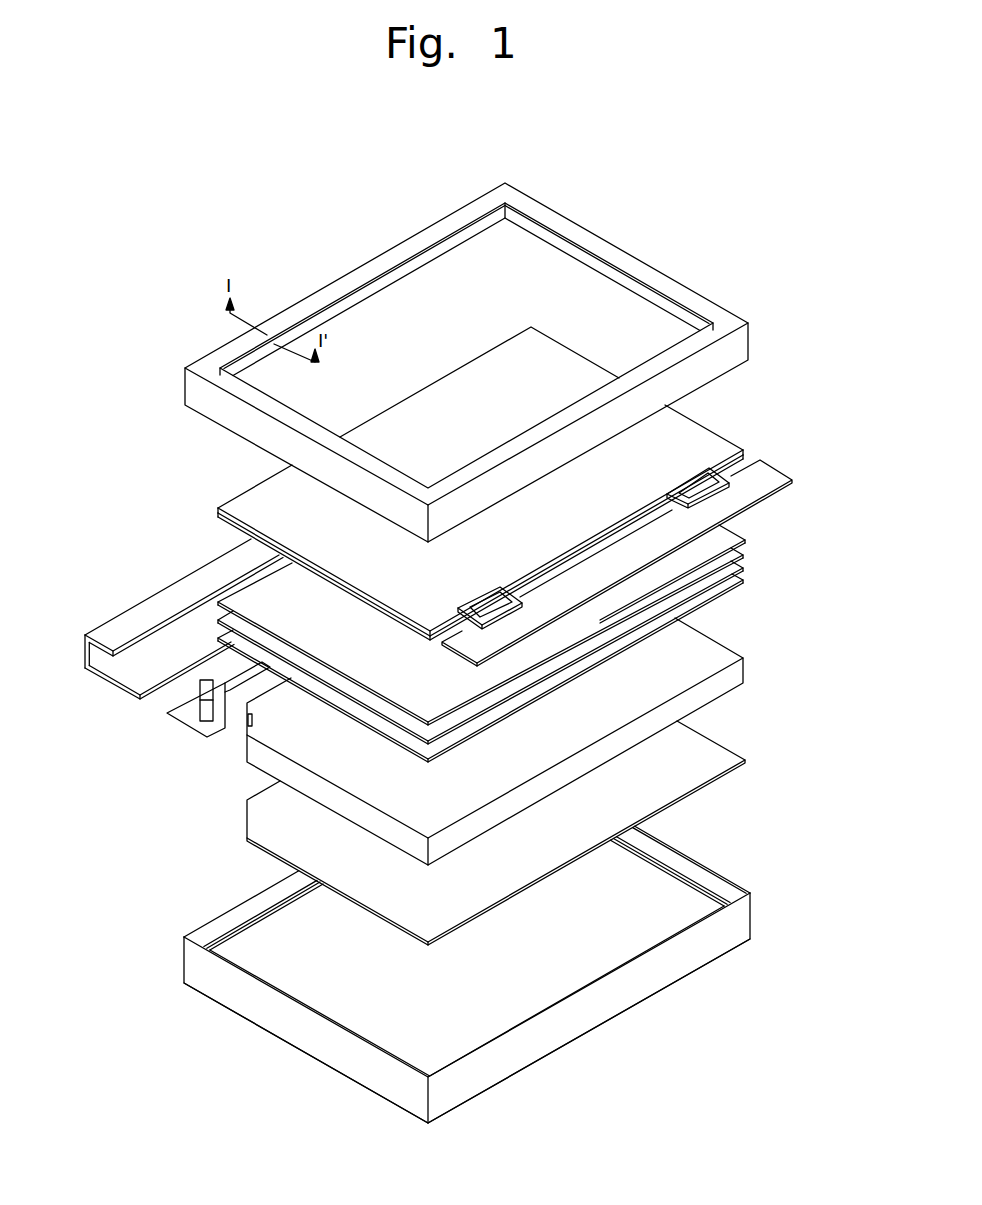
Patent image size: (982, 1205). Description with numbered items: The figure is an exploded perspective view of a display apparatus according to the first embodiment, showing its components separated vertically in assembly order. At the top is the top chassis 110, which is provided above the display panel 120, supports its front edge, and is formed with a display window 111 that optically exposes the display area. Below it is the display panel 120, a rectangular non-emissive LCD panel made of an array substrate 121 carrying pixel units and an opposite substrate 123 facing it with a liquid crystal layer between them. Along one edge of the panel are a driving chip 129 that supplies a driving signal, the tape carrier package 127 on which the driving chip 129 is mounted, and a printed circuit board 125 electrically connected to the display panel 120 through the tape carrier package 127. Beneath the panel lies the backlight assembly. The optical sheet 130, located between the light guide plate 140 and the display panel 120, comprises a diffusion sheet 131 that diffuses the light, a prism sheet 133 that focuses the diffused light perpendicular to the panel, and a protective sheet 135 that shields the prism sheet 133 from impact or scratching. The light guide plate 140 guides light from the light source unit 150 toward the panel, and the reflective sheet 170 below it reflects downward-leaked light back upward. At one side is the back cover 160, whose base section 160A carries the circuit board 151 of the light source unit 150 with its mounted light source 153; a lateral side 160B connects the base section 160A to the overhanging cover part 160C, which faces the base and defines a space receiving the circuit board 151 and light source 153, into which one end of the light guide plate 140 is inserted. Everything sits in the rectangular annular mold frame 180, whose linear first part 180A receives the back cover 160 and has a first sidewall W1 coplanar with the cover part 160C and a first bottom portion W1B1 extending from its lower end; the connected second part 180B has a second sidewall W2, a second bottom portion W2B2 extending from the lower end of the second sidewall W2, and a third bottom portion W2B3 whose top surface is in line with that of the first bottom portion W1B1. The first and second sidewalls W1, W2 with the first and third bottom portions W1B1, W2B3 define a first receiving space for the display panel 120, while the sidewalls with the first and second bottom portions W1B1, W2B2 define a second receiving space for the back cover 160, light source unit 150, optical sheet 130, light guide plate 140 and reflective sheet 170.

The top chassis 110 is at (350, 271).
The display window 111 is at (557, 268).
The display panel 120 is at (510, 483).
The array substrate 121 is at (732, 453).
The opposite substrate 123 is at (710, 440).
The printed circuit board 125 is at (705, 555).
The tape carrier package 127 is at (687, 528).
The driving chip 129 is at (700, 493).
The optical sheet 130 is at (533, 655).
The diffusion sheet 131 is at (702, 600).
The prism sheet 133 is at (702, 590).
The protective sheet 135 is at (707, 563).
The light guide plate 140 is at (733, 675).
The light source unit 150 is at (157, 724).
The circuit board 151 is at (199, 712).
The light source 153 is at (170, 720).
The back cover 160 is at (162, 624).
The base section 160A is at (102, 683).
The lateral side 160B is at (85, 652).
The cover part 160C is at (190, 587).
The reflective sheet 170 is at (693, 742).
The mold frame 180 is at (487, 974).
The first part 180A is at (270, 893).
The second part 180B is at (315, 1040).
The first sidewall W1 is at (203, 937).
The first bottom portion W1B1 is at (253, 930).
The second sidewall W2 is at (690, 872).
The second bottom portion W2B2 is at (687, 912).
The third bottom portion W2B3 is at (703, 895).